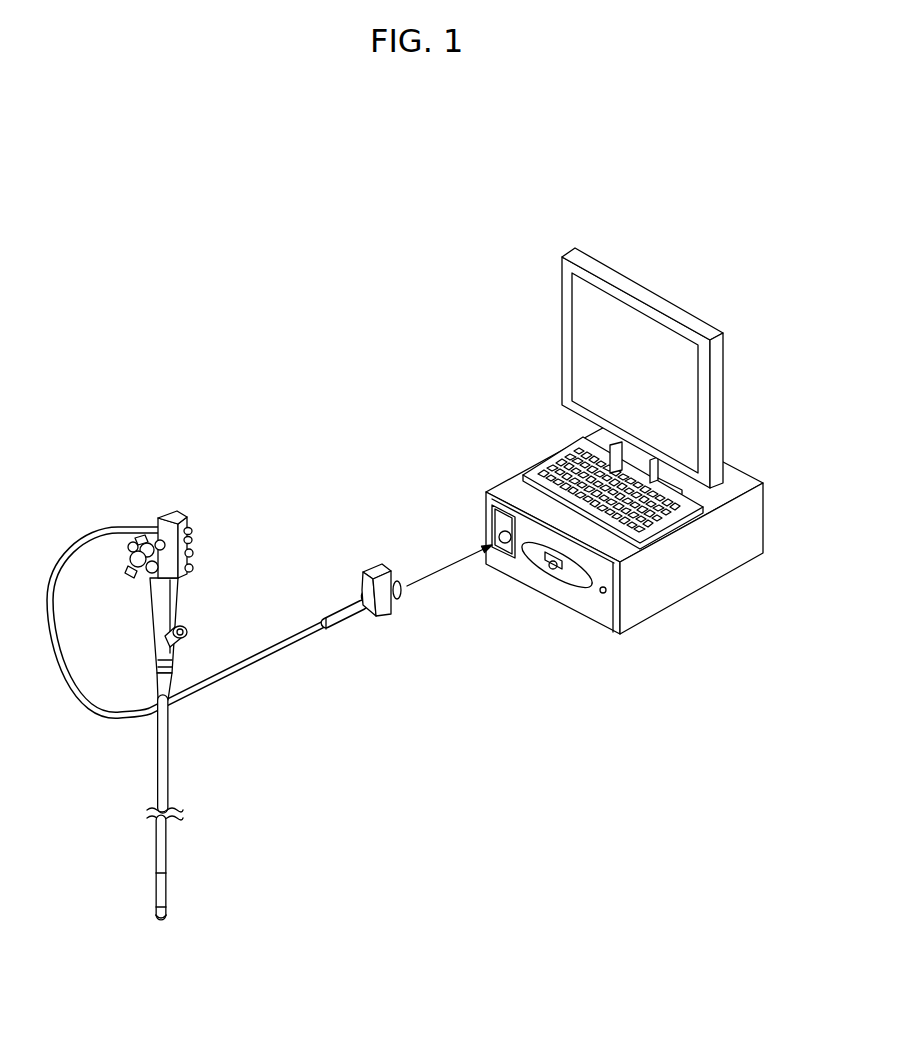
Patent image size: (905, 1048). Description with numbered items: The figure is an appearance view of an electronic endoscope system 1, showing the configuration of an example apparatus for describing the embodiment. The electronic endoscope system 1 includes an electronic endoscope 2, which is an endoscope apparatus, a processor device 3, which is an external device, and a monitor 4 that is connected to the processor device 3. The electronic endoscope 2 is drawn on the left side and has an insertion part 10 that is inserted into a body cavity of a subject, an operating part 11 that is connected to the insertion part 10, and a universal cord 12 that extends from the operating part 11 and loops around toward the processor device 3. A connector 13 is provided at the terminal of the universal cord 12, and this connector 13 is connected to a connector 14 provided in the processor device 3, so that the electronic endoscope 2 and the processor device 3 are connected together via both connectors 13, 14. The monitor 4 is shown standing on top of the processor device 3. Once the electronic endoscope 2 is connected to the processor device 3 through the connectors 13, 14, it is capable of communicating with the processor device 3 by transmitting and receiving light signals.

The electronic endoscope system 1 is at (279, 318).
The electronic endoscope 2 is at (192, 500).
The processor device 3 is at (765, 517).
The monitor 4 is at (725, 380).
The insertion part 10 is at (165, 914).
The operating part 11 is at (163, 530).
The universal cord 12 is at (297, 643).
The connector 13 is at (378, 568).
The connector 14 is at (490, 511).